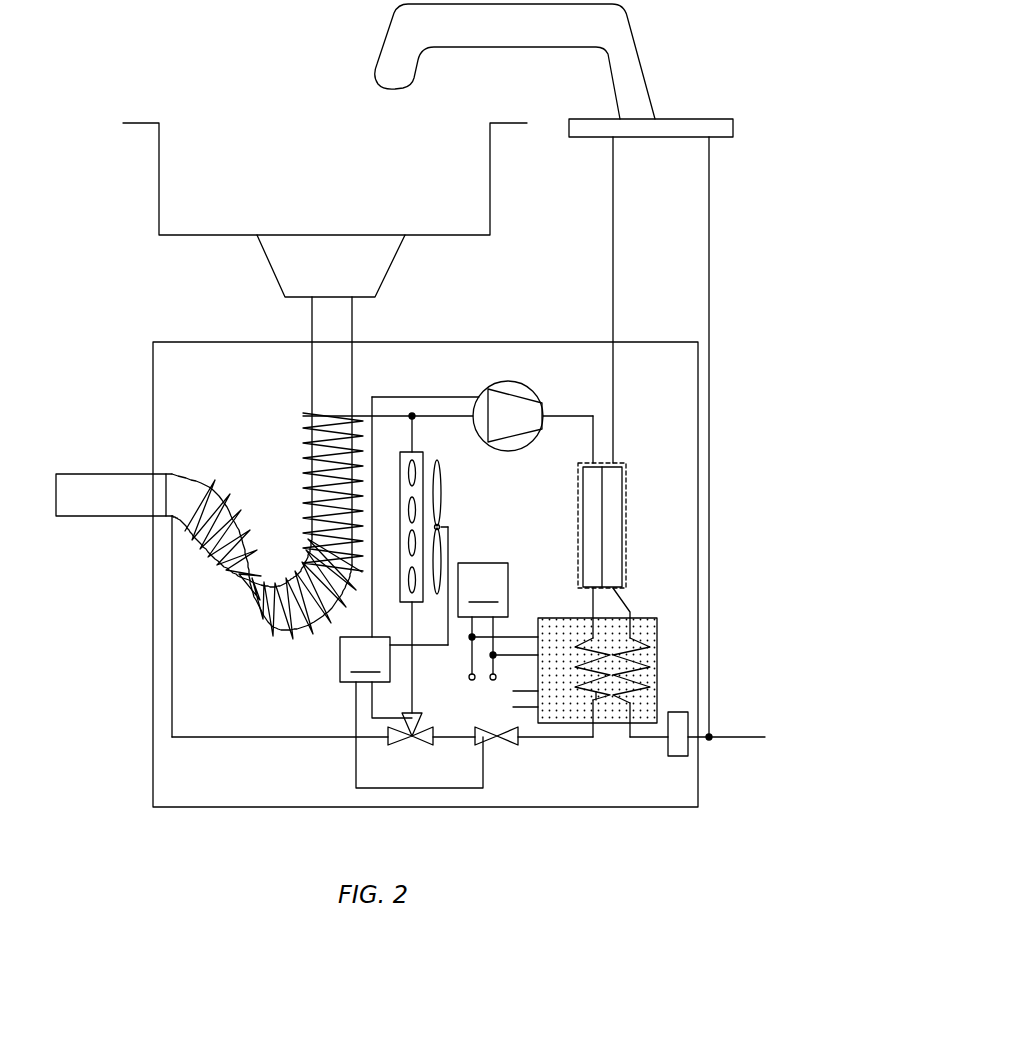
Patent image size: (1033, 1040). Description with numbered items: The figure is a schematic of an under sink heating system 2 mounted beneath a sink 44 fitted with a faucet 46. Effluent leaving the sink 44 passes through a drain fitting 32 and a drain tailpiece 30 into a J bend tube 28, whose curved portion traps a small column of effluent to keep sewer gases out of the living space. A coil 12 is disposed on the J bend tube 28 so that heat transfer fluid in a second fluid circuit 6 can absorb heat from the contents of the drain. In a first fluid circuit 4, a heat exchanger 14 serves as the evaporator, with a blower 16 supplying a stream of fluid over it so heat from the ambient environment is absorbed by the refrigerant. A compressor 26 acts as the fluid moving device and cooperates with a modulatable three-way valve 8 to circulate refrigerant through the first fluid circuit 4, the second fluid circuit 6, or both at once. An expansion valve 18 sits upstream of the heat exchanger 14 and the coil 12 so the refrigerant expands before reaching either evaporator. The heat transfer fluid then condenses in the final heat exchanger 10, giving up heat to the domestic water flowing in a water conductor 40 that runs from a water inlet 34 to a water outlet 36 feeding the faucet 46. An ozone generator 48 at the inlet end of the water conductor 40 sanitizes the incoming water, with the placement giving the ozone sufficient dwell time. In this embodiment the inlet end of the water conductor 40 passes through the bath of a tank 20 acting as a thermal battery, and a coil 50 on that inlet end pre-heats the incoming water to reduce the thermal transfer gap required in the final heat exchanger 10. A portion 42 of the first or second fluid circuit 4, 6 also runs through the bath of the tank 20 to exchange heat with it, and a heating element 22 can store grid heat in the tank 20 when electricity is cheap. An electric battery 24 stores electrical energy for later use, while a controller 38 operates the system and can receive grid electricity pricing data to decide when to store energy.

The under sink heating system 2 is at (575, 342).
The first fluid circuit 4 is at (413, 662).
The second fluid circuit 6 is at (238, 737).
The 3-way valve 8 is at (415, 748).
The final heat exchanger 10 is at (578, 585).
The coil 12 is at (305, 479).
The heat exchanger 14 is at (420, 452).
The blower 16 is at (443, 475).
The expansion valve 18 is at (502, 748).
The tank 20 is at (593, 705).
The heating element 22 is at (534, 655).
The electric battery 24 is at (483, 590).
The compressor 26 is at (497, 388).
The J bend tube 28 is at (255, 576).
The drain tailpiece 30 is at (312, 309).
The drain fitting 32 is at (393, 266).
The water inlet 34 is at (745, 737).
The water outlet 36 is at (613, 178).
The controller 38 is at (411, 712).
The water conductor 40 is at (627, 609).
The portion of fluid circuit disposed within bath of tank 42 is at (597, 692).
The sink 44 is at (490, 188).
The faucet 46 is at (637, 38).
The ozone generator 48 is at (678, 712).
The coil 50 is at (645, 648).